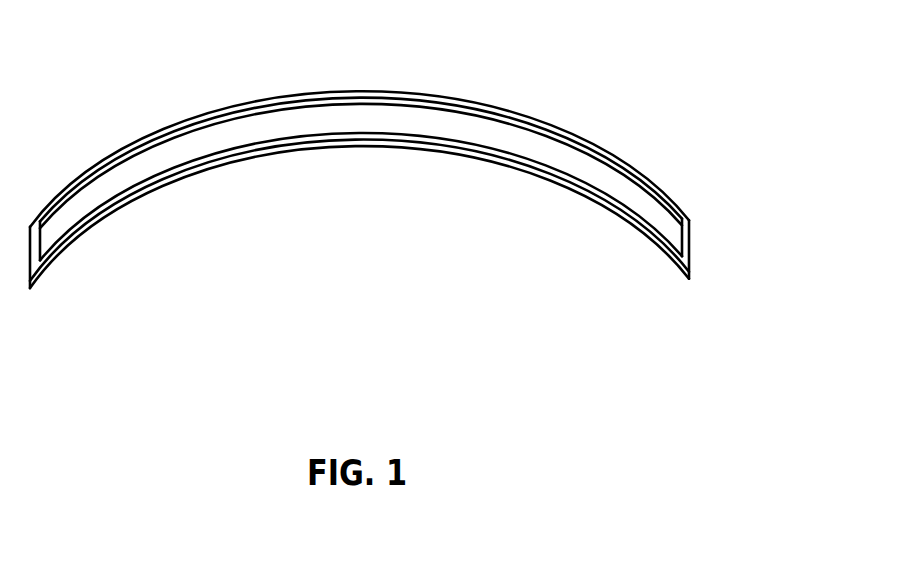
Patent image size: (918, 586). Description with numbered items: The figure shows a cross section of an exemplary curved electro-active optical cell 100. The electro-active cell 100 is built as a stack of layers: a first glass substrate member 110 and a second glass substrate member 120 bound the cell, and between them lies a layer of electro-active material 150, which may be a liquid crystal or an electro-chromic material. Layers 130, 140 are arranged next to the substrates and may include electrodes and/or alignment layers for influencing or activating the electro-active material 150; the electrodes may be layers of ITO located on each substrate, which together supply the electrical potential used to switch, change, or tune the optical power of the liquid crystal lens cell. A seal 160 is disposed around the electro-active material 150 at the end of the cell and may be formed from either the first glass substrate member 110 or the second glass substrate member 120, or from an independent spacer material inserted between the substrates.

The electro-active cell 100 is at (432, 155).
The first glass substrate member 110 is at (230, 107).
The second glass substrate member 120 is at (360, 146).
The layer 130 is at (304, 97).
The layer 140 is at (217, 160).
The layer of electro-active material 150 is at (478, 132).
The seal 160 is at (689, 246).